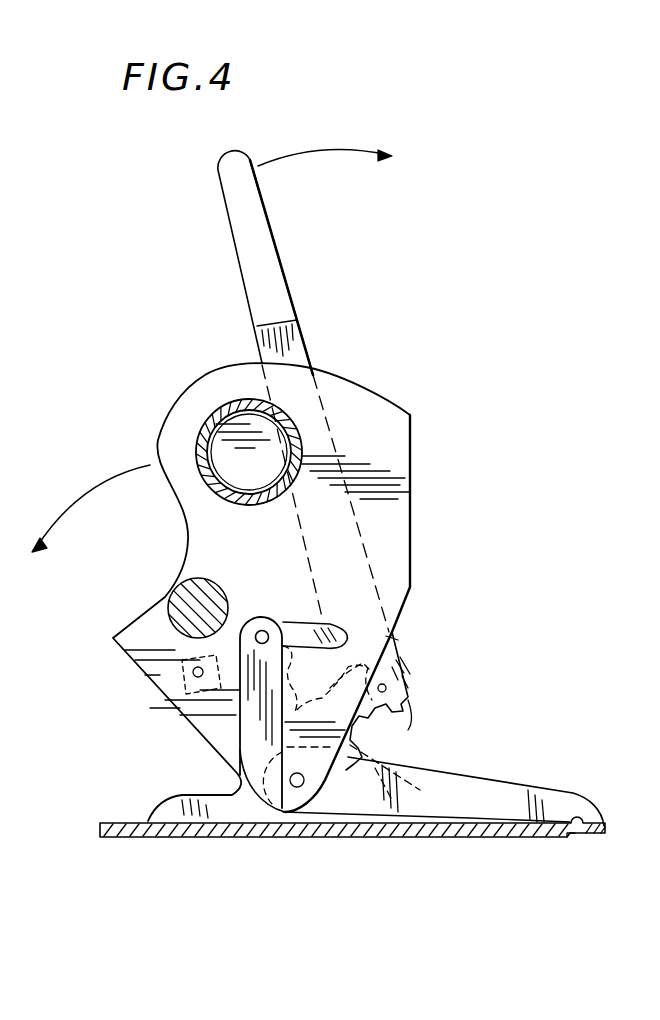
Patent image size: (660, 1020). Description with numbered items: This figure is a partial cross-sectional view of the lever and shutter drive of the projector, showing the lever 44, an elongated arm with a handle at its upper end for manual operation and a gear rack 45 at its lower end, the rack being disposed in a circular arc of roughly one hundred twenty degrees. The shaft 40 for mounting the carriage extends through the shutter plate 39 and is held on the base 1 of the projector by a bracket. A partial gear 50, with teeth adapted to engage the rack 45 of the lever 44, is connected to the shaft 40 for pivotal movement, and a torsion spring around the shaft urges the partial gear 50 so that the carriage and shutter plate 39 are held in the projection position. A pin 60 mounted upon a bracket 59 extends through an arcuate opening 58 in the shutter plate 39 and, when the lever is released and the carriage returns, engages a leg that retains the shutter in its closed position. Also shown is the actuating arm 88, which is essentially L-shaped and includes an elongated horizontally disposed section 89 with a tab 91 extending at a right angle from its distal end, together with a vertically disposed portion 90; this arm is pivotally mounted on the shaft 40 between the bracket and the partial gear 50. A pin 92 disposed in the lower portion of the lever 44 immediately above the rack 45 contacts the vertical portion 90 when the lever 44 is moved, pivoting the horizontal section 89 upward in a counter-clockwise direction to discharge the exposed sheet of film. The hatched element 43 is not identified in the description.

The base 1 is at (238, 838).
The shutter plate 39 is at (402, 482).
The shaft 40 is at (297, 788).
The pin 43 is at (186, 603).
The lever 44 is at (243, 168).
The gear rack 45 is at (405, 718).
The partial gear 50 is at (360, 815).
The arcuate opening 58 is at (300, 627).
The bracket 59 is at (180, 796).
The pin 60 is at (262, 630).
The actuating arm 88 is at (537, 768).
The horizontally disposed section 89 is at (536, 838).
The vertically disposed portion 90 is at (404, 664).
The tab 91 is at (597, 834).
The pin 92 is at (388, 688).